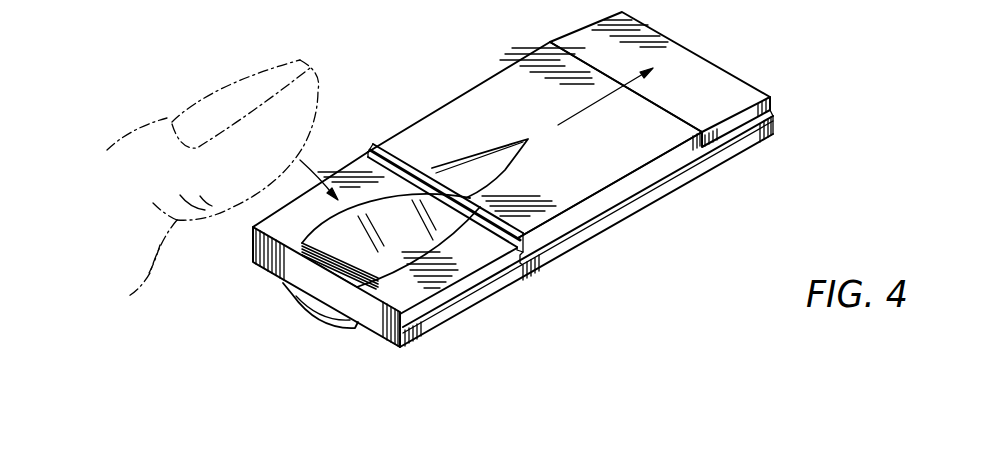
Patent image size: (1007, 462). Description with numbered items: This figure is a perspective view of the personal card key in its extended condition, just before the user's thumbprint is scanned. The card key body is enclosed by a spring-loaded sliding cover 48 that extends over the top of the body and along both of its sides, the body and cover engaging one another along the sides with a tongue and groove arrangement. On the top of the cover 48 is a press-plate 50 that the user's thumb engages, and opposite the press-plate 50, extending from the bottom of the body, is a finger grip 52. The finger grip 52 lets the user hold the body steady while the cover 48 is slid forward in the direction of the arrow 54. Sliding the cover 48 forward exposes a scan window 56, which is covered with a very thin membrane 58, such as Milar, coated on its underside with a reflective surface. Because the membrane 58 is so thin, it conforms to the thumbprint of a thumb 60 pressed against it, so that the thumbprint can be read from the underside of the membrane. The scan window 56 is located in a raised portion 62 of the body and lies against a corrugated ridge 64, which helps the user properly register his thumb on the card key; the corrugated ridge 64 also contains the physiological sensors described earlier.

The sliding cover 48 is at (612, 217).
The press-plate 50 is at (433, 171).
The finger grip 52 is at (313, 317).
The arrow 54 is at (597, 100).
The scan window 56 is at (385, 218).
The membrane 58 is at (397, 250).
The thumb 60 is at (204, 110).
The raised portion 62 is at (436, 251).
The corrugated ridge 64 is at (325, 250).